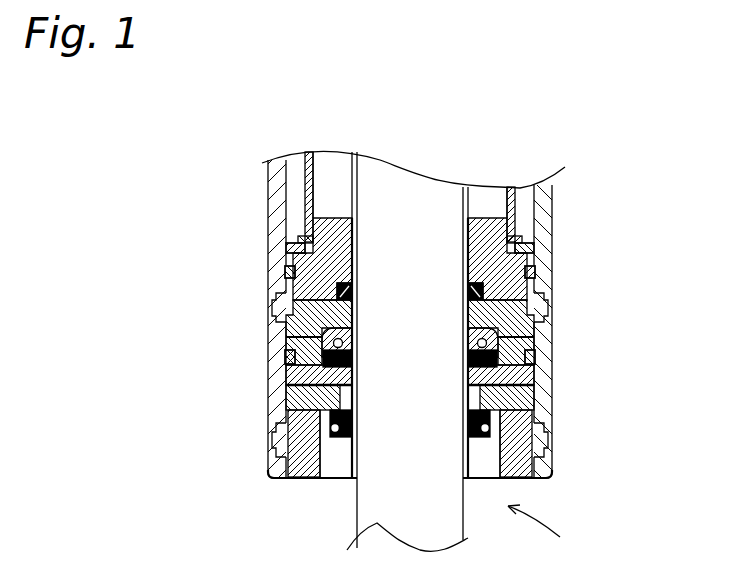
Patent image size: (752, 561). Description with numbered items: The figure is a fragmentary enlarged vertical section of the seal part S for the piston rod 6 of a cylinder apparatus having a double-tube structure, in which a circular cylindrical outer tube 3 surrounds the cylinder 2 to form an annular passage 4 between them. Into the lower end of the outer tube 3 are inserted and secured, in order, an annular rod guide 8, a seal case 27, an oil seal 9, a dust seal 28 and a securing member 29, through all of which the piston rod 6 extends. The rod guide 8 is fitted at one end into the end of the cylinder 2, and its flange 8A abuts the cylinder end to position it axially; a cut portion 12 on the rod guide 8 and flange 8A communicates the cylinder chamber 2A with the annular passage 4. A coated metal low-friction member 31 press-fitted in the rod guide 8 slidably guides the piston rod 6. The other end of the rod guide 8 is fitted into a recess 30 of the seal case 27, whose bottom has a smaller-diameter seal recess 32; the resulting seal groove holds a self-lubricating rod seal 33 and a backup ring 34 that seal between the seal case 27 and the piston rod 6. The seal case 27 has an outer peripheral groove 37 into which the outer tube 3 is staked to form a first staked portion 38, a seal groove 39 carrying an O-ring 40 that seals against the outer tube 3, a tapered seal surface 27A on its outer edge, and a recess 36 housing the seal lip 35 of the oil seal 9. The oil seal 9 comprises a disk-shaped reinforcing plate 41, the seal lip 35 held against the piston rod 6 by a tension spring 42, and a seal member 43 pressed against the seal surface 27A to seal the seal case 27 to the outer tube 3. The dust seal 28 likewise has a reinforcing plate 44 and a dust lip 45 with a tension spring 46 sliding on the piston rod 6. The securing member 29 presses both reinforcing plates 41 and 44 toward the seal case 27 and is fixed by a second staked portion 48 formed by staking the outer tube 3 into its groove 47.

The cylinder 2 is at (513, 188).
The cylinder chamber 2A is at (343, 172).
The outer tube 3 is at (541, 206).
The annular passage 4 is at (292, 182).
The piston rod 6 is at (452, 522).
The rod guide 8 is at (303, 230).
The flange 8A is at (300, 250).
The oil seal 9 is at (542, 372).
The cut portion 12 is at (528, 250).
The seal case 27 is at (484, 287).
The tapered seal surface 27A is at (290, 362).
The dust seal 28 is at (540, 407).
The securing member 29 is at (517, 477).
The recess 30 is at (305, 236).
The low-friction member 31 is at (331, 217).
The seal recess 32 is at (483, 238).
The rod seal 33 is at (355, 297).
The backup ring 34 is at (300, 300).
The seal lip 35 is at (536, 352).
The recess 36 is at (545, 306).
The outer peripheral groove 37 is at (283, 337).
The first staked portion 38 is at (275, 305).
The seal groove 39 is at (289, 272).
The O-ring 40 is at (533, 273).
The reinforcing plate 41 is at (542, 410).
The tension spring 42 is at (488, 344).
The seal member 43 is at (297, 386).
The reinforcing plate 44 is at (292, 423).
The dust lip 45 is at (340, 440).
The tension spring 46 is at (293, 480).
The groove 47 is at (272, 468).
The second staked portion 48 is at (280, 442).
The seal part S is at (544, 532).